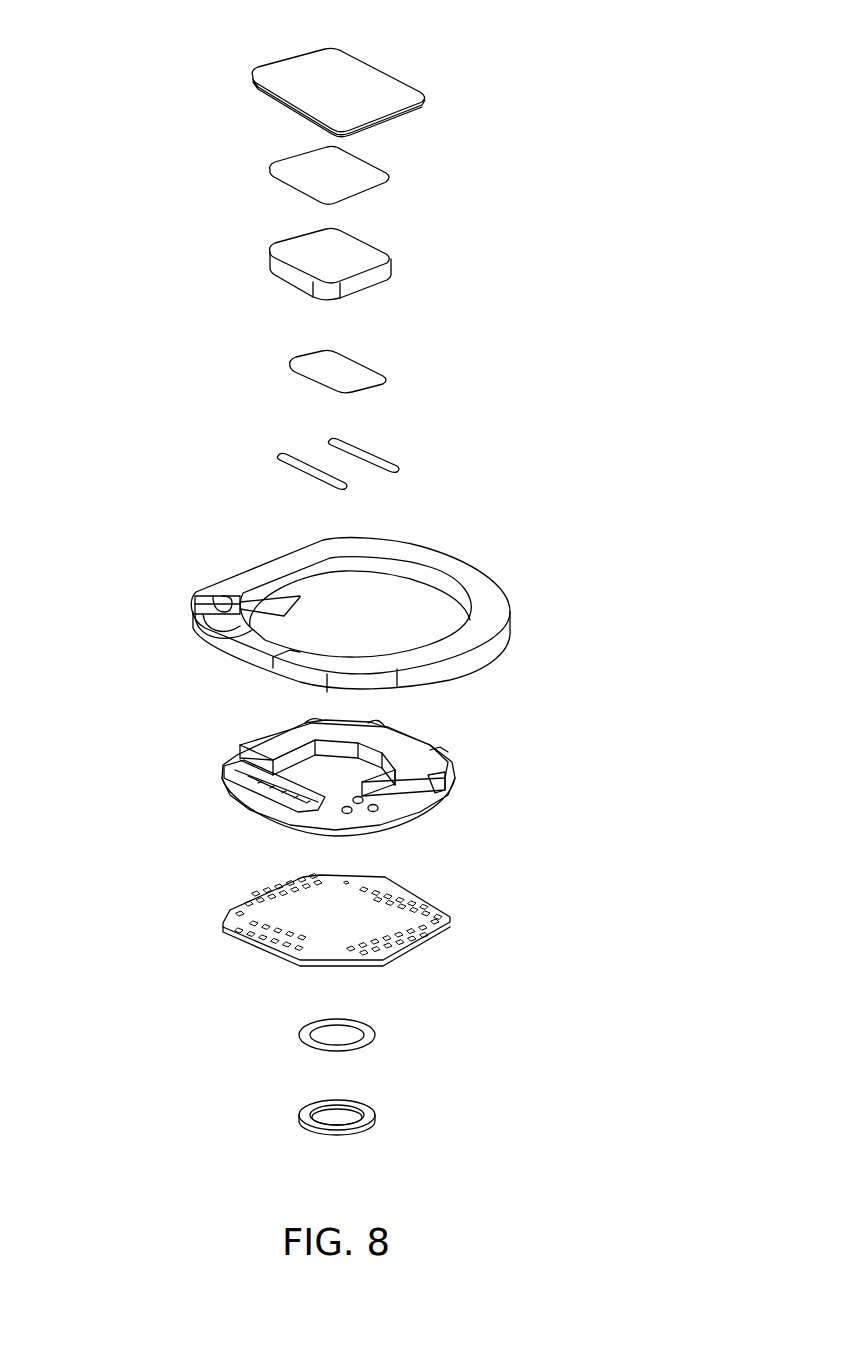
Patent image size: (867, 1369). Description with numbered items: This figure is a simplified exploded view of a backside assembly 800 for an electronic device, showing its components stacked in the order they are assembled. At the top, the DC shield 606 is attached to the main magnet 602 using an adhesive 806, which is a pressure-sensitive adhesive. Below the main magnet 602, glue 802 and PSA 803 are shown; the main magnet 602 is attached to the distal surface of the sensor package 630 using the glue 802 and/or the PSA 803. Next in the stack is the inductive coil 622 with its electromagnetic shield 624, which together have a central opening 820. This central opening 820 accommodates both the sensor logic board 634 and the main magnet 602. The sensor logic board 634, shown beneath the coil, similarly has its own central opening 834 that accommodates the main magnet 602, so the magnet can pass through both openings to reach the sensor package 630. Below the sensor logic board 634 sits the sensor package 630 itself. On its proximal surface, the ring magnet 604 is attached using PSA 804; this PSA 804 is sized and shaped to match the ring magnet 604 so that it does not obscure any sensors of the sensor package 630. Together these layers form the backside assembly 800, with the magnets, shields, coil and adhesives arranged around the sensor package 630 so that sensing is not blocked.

The backside assembly 800 is at (158, 42).
The DC shield 606 is at (426, 97).
The adhesive 806 is at (390, 178).
The main magnet 602 is at (392, 259).
The glue 802 is at (384, 376).
The PSA 803 is at (393, 466).
The inductive coil 622 is at (203, 653).
The electromagnetic shield 624 is at (218, 592).
The central opening 820 is at (408, 612).
The sensor logic board 634 is at (430, 795).
The central opening 834 is at (331, 787).
The sensor package 630 is at (445, 937).
The PSA 804 is at (375, 1042).
The ring magnet 604 is at (375, 1122).